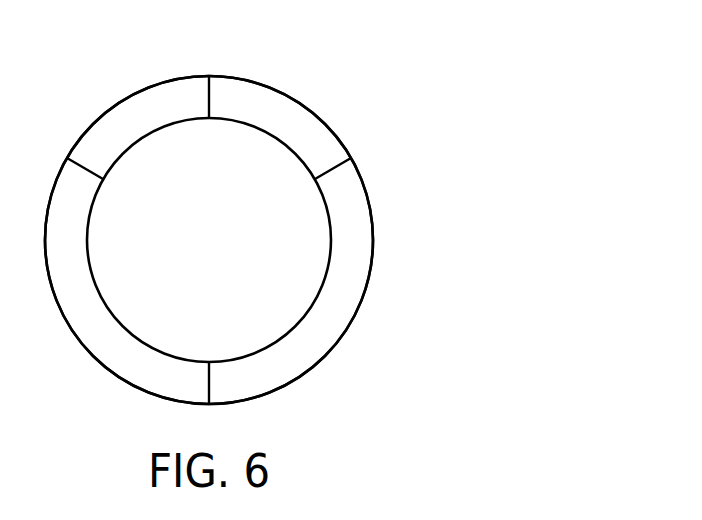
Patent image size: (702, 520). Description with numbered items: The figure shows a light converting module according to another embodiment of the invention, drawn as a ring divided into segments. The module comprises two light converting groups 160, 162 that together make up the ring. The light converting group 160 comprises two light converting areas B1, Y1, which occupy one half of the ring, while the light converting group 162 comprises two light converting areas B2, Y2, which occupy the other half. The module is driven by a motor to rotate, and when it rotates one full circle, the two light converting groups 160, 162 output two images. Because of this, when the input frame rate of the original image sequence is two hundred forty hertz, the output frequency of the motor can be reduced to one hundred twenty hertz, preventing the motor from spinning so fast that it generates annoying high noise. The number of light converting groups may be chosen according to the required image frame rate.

The light converting group 160 is at (306, 105).
The light converting group 162 is at (174, 78).
The light converting area B1 is at (279, 116).
The light converting area B2 is at (140, 116).
The light converting area Y1 is at (329, 321).
The light converting area Y2 is at (93, 321).